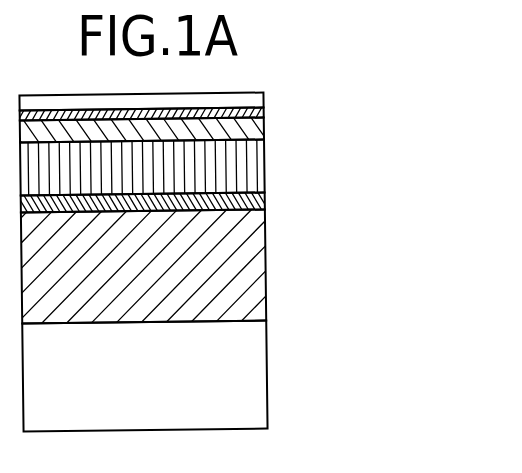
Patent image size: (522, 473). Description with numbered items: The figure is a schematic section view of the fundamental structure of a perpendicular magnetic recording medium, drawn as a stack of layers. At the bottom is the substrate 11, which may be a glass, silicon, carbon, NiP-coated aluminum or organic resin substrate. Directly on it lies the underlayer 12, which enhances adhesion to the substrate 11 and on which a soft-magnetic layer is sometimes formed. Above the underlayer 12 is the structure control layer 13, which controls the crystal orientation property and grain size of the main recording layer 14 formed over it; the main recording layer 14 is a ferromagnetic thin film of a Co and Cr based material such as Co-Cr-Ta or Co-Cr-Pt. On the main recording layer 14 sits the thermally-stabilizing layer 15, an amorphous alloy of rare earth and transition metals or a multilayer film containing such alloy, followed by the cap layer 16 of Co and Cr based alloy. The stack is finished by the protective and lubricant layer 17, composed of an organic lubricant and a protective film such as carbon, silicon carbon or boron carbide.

The substrate 11 is at (252, 383).
The underlayer 12 is at (252, 263).
The structure control layer 13 is at (265, 197).
The main recording layer 14 is at (245, 165).
The thermally-stabilizing layer 15 is at (249, 123).
The cap layer 16 is at (262, 106).
The protective and lubricant layer 17 is at (245, 100).